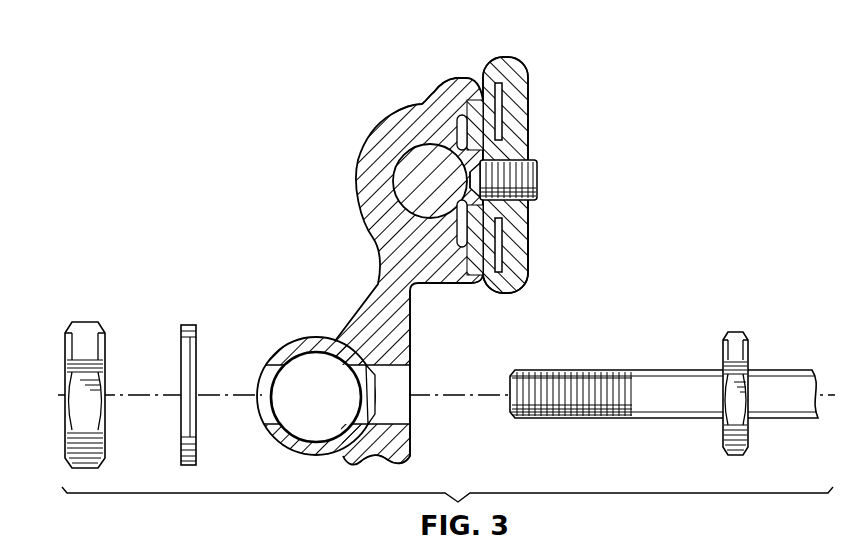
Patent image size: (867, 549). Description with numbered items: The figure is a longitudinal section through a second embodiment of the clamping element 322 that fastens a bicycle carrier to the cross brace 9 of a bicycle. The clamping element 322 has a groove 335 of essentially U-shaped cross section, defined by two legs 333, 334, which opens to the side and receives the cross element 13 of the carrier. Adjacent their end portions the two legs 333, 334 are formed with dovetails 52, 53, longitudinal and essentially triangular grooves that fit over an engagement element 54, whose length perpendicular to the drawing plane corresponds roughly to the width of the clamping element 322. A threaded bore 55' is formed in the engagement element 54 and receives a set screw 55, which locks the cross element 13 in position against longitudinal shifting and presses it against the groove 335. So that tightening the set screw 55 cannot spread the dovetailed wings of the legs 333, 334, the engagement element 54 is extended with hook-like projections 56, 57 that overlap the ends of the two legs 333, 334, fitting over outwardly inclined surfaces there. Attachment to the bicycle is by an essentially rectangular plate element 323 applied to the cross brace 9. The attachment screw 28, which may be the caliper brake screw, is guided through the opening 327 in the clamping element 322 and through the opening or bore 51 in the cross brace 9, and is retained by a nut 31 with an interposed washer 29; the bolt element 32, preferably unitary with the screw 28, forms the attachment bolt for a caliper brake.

The clamping element 322 is at (326, 68).
The leg 333 is at (420, 110).
The leg 334 is at (445, 275).
The plate element 323 is at (403, 453).
The opening 327 is at (397, 412).
The cross element 13 is at (402, 187).
The hook-like projection 56 is at (506, 58).
The groove 335 is at (494, 108).
The dovetail 53 is at (495, 117).
The engagement element 54 is at (478, 221).
The dovetail 52 is at (517, 255).
The hook-like projection 57 is at (516, 280).
The set screw 55 is at (541, 181).
The threaded bore 55' is at (541, 165).
The opening or bore 51 is at (268, 416).
The cross brace 9 is at (318, 451).
The nut 31 is at (104, 462).
The washer 29 is at (185, 413).
The attachment screw 28 is at (578, 420).
The bolt element 32 is at (777, 420).